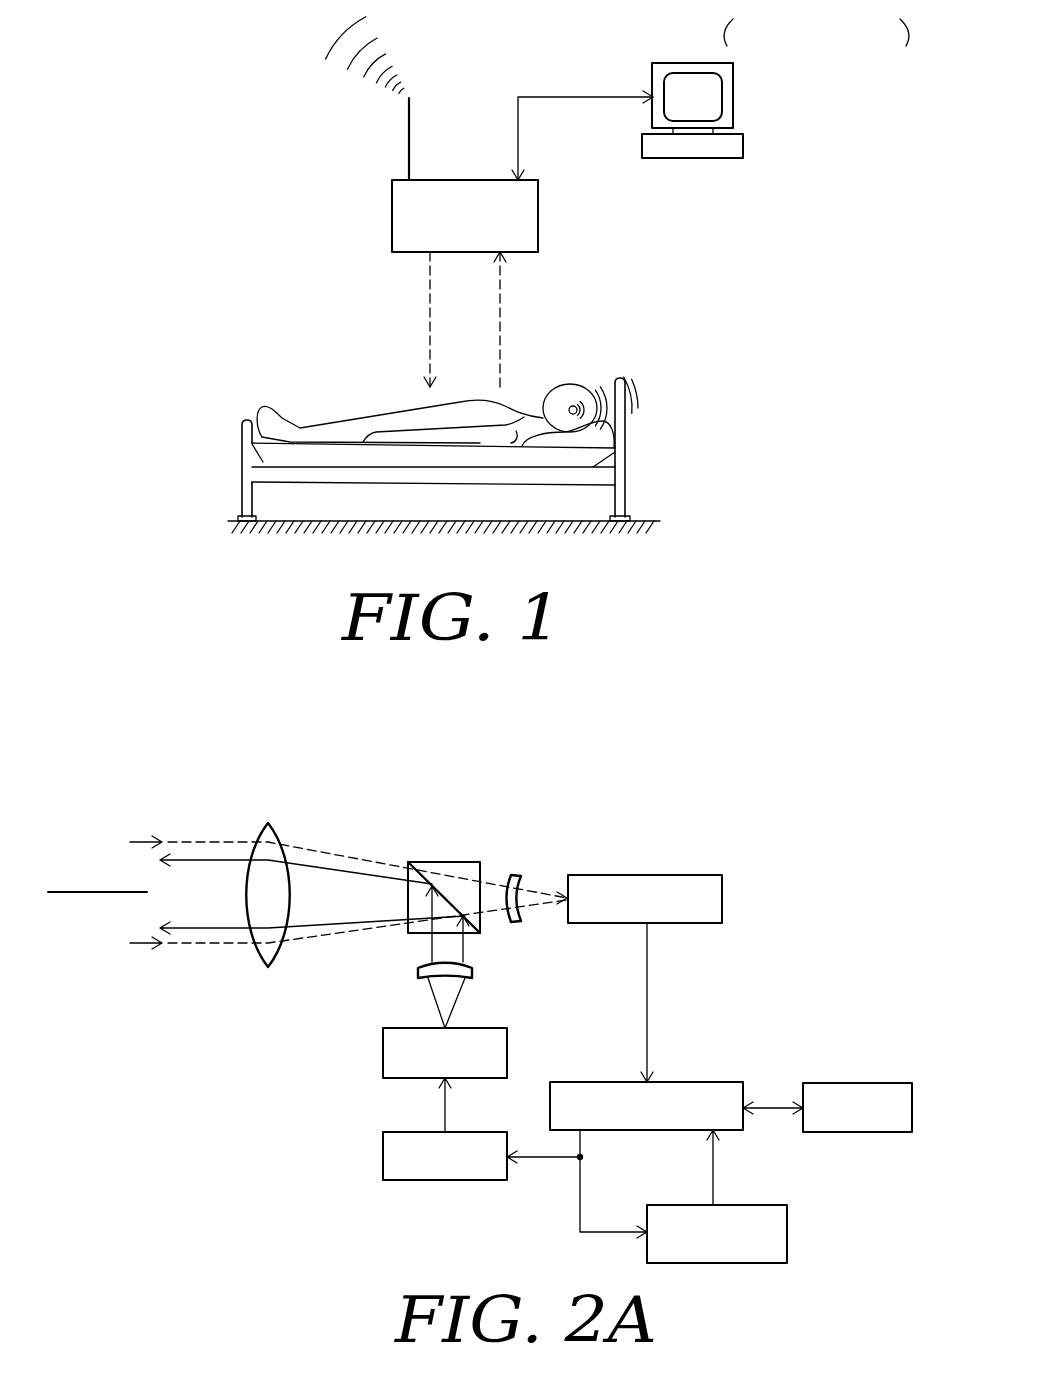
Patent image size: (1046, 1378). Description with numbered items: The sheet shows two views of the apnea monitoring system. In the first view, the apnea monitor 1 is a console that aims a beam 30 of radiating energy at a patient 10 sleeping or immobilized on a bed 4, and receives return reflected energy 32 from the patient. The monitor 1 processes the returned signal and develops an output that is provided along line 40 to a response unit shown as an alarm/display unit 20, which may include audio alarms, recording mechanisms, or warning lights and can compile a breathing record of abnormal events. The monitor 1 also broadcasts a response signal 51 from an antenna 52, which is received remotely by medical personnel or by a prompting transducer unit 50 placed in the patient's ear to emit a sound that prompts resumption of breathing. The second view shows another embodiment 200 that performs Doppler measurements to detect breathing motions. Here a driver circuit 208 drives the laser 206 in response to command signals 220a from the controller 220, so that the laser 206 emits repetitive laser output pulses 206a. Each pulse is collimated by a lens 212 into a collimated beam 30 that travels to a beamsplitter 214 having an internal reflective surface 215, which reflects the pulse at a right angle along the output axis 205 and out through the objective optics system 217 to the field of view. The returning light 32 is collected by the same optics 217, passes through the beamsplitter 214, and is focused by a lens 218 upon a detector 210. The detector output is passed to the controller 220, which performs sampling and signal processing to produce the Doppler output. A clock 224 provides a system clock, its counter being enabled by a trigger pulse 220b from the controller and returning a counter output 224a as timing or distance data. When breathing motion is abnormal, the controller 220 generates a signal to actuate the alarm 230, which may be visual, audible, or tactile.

In FIG. 1, the apnea monitor 1 is at (538, 217).
In FIG. 1, the bed 4 is at (628, 438).
In FIG. 1, the patient 10 is at (525, 358).
In FIG. 1, the alarm/display unit 20 is at (717, 107).
In FIG. 1, the beam 30 is at (430, 290).
In FIG. 2A, the beam 30 is at (200, 857).
In FIG. 1, the return reflected energy 32 is at (502, 297).
In FIG. 2A, the return reflected energy 32 is at (225, 841).
In FIG. 1, the line 40 is at (592, 96).
In FIG. 1, the prompting transducer unit 50 is at (574, 406).
In FIG. 1, the response signal 51 is at (410, 52).
In FIG. 1, the antenna 52 is at (410, 123).
In FIG. 2A, the embodiment 200 is at (637, 828).
In FIG. 2A, the axis 205 is at (82, 890).
In FIG. 2A, the laser 206 is at (383, 1040).
In FIG. 2A, the laser output pulse 206a is at (456, 1003).
In FIG. 2A, the driver circuit 208 is at (383, 1145).
In FIG. 2A, the detector 210 is at (645, 875).
In FIG. 2A, the lens 212 is at (418, 970).
In FIG. 2A, the beamsplitter 214 is at (435, 860).
In FIG. 2A, the reflective surface 215 is at (408, 866).
In FIG. 2A, the objective optics system 217 is at (274, 835).
In FIG. 2A, the lens 218 is at (517, 873).
In FIG. 2A, the controller 220 is at (673, 1082).
In FIG. 2A, the command signals 220a is at (550, 1158).
In FIG. 2A, the trigger pulse 220b is at (578, 1213).
In FIG. 2A, the clock 224 is at (758, 1205).
In FIG. 2A, the counter output 224a is at (713, 1170).
In FIG. 2A, the alarm 230 is at (823, 1083).